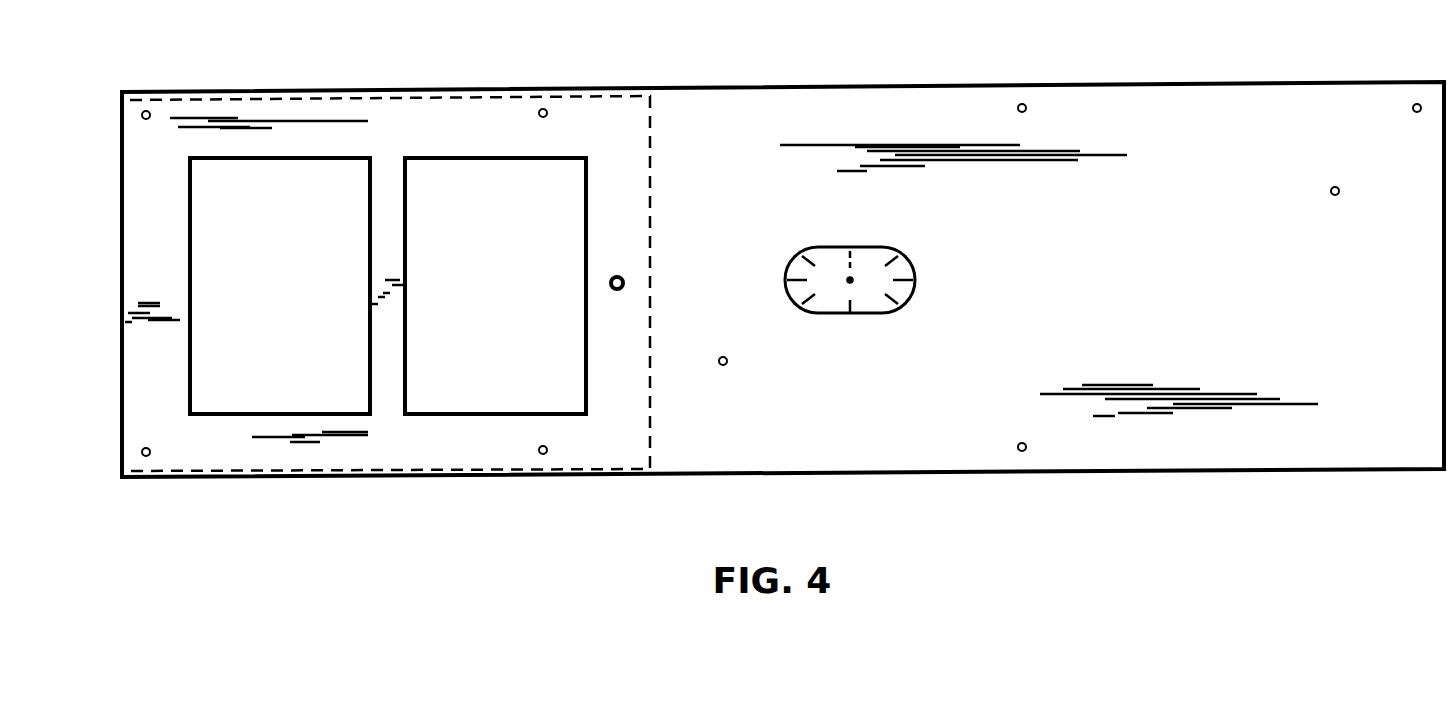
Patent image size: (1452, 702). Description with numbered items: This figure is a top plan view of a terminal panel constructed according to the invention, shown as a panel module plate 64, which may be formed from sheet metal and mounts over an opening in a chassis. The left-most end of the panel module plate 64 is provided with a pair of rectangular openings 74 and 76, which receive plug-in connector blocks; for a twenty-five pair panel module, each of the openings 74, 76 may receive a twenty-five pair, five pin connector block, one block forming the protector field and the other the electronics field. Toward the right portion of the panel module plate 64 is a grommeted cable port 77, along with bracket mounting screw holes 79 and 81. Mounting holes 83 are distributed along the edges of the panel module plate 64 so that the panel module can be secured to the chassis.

The panel module plate 64 is at (1310, 358).
The rectangular opening 74 is at (284, 281).
The rectangular opening 76 is at (496, 281).
The grommeted cable port 77 is at (873, 306).
The bracket mounting screw hole 79 is at (728, 364).
The bracket mounting screw hole 81 is at (1332, 186).
The mounting holes 83 is at (148, 112).